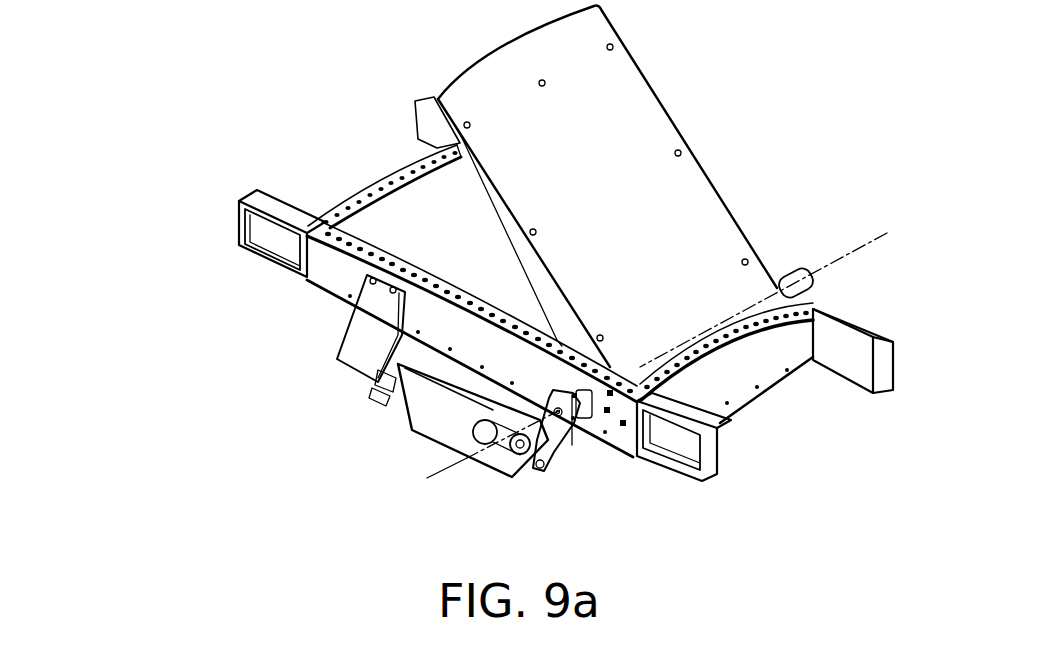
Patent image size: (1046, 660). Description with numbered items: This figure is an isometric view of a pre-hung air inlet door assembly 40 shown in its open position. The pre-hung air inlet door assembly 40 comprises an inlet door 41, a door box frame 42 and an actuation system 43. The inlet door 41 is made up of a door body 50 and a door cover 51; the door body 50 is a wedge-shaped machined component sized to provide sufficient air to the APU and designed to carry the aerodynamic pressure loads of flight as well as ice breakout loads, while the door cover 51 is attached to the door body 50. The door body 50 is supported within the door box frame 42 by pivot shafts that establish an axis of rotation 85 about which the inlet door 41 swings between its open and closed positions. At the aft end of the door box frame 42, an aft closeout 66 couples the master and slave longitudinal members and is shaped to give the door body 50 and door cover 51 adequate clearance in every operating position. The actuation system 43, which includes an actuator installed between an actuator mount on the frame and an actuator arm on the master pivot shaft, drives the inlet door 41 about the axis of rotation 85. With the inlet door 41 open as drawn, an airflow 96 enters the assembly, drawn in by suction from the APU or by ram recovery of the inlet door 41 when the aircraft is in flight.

The pre-hung air inlet door assembly 40 is at (190, 205).
The inlet door 41 is at (596, 186).
The door box frame 42 is at (258, 194).
The actuation system 43 is at (427, 408).
The door body 50 is at (527, 267).
The door cover 51 is at (680, 197).
The aft closeout 66 is at (733, 380).
The axis of rotation 85 is at (845, 262).
The airflow 96 is at (328, 139).